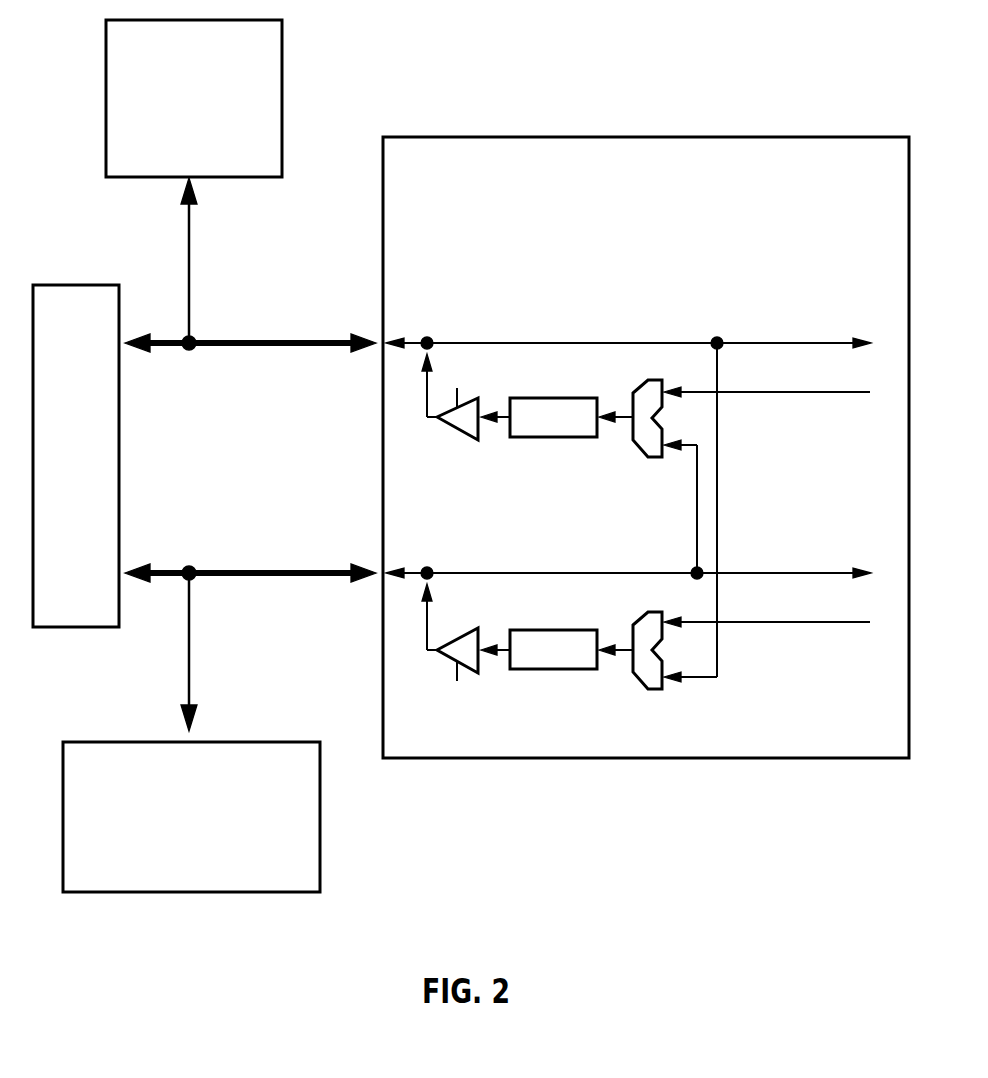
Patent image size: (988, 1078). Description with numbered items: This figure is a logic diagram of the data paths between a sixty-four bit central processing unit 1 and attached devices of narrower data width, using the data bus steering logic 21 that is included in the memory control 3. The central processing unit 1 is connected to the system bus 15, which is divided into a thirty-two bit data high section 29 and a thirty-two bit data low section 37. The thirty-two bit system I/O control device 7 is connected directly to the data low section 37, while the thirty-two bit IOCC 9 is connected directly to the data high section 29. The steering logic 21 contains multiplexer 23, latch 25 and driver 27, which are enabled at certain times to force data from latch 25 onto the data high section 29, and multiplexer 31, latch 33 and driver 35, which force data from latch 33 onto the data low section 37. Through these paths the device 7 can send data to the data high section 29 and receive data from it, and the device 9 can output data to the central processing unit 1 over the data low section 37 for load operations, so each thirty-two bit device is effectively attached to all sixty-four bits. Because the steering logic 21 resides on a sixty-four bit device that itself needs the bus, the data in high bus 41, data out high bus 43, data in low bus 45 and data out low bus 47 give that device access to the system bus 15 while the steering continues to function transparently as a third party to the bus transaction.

The central processing unit 1 is at (64, 434).
The memory control 3 is at (824, 103).
The 32 bit system I/O control device 7 is at (284, 862).
The 32 bit IOCC 9 is at (243, 143).
The system bus 15 is at (221, 458).
The data bus steering logic 21 is at (826, 224).
The multiplexer 23 is at (637, 392).
The latch 25 is at (540, 398).
The driver 27 is at (469, 399).
The data high section 29 is at (253, 338).
The multiplexer 31 is at (637, 624).
The latch 33 is at (540, 630).
The driver 35 is at (469, 630).
The data low section 37 is at (168, 583).
The data in high bus 41 is at (791, 349).
The data out high bus 43 is at (800, 391).
The data in low bus 45 is at (791, 579).
The data out low bus 47 is at (800, 621).